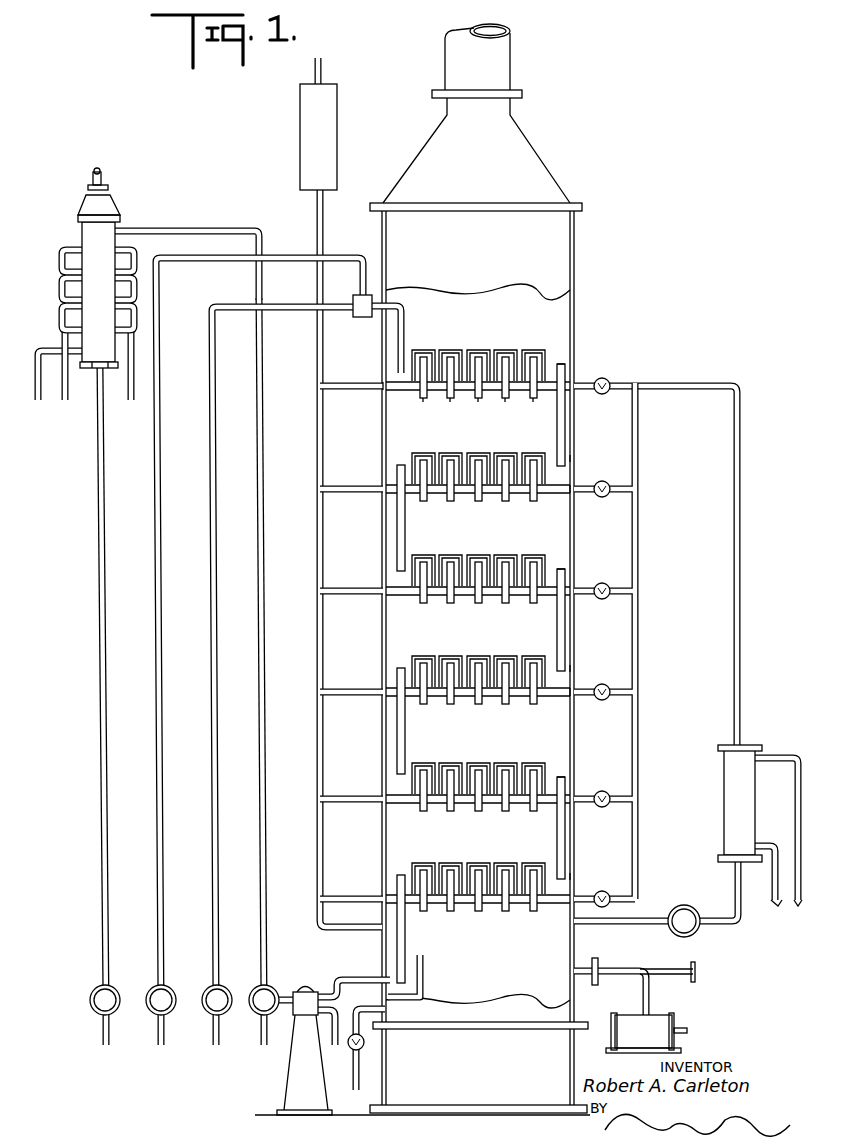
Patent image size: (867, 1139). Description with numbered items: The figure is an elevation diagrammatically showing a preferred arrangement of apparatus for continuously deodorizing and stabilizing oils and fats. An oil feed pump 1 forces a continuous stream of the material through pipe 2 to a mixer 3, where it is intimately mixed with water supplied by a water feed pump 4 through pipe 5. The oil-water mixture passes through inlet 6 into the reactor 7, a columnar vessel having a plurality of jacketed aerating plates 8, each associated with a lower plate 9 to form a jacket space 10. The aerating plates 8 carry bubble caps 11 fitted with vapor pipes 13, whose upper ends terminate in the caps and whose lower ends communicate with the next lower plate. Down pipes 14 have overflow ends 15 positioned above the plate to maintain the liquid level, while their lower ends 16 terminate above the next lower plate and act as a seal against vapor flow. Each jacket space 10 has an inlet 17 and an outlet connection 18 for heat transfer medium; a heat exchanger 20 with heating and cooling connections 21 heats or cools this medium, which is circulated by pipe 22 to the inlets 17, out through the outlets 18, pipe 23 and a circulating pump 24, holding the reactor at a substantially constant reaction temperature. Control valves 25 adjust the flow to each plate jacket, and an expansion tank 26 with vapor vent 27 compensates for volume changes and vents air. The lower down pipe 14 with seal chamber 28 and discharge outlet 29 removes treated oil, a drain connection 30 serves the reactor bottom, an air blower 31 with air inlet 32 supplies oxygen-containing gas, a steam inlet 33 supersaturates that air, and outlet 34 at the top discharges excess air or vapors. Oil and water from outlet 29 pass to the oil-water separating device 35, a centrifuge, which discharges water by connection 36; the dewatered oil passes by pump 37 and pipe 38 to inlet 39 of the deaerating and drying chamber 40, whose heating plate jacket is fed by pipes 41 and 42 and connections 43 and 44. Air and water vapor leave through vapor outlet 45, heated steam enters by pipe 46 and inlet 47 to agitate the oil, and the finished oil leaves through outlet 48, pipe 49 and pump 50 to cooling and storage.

The oil feed pump 1 is at (207, 988).
The pipe 2 is at (216, 407).
The mixer 3 is at (362, 318).
The water feed pump 4 is at (151, 988).
The pipe 5 is at (160, 407).
The inlet 6 is at (403, 326).
The reactor 7 is at (575, 272).
The jacketed aerating plate 8 is at (383, 381).
The lower plate 9 is at (410, 393).
The jacket space 10 is at (520, 398).
The bubble cap 11 is at (533, 352).
The vapor pipe 13 is at (462, 356).
The down pipe 14 is at (566, 417).
The overflow end 15 is at (568, 366).
The lower end 16 is at (576, 458).
The inlet 17 is at (584, 485).
The outlet connection 18 is at (372, 391).
The heat exchanger 20 is at (724, 784).
The connections 21 is at (780, 842).
The pipe 22 is at (742, 607).
The pipe 23 is at (327, 443).
The circulating pump 24 is at (686, 905).
The control valve 25 is at (607, 379).
The expansion tank 26 is at (337, 128).
The vapor vent 27 is at (322, 62).
The seal chamber 28 is at (422, 960).
The discharge outlet 29 is at (361, 979).
The drain connection 30 is at (374, 1007).
The air blower 31 is at (672, 1015).
The air inlet 32 is at (584, 966).
The steam inlet 33 is at (650, 970).
The outlet 34 is at (513, 68).
The oil-water separating device 35 is at (306, 990).
The connection 36 is at (332, 1030).
The pump 37 is at (256, 988).
The pipe 38 is at (264, 401).
The inlet 39 is at (120, 230).
The deaerating and drying chamber 40 is at (82, 228).
The pipe 41 is at (131, 402).
The pipe 42 is at (65, 402).
The connection 43 is at (120, 247).
The connection 44 is at (66, 251).
The vapor outlet 45 is at (102, 178).
The pipe 46 is at (38, 402).
The inlet 47 is at (94, 367).
The outlet 48 is at (108, 367).
The pipe 49 is at (101, 645).
The pump 50 is at (92, 988).